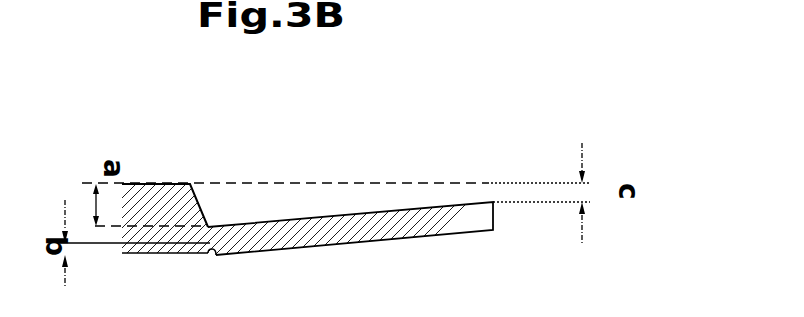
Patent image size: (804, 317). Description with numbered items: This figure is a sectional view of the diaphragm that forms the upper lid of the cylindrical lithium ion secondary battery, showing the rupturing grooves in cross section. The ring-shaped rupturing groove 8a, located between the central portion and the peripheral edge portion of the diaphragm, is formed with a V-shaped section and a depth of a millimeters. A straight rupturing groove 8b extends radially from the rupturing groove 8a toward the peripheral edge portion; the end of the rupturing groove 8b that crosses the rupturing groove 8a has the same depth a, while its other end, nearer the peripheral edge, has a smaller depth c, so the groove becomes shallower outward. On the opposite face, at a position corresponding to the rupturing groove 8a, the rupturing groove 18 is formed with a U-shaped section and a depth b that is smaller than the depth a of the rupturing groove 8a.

The rupturing groove 8a is at (205, 198).
The rupturing groove 8b is at (375, 218).
The rupturing groove 18 is at (211, 258).